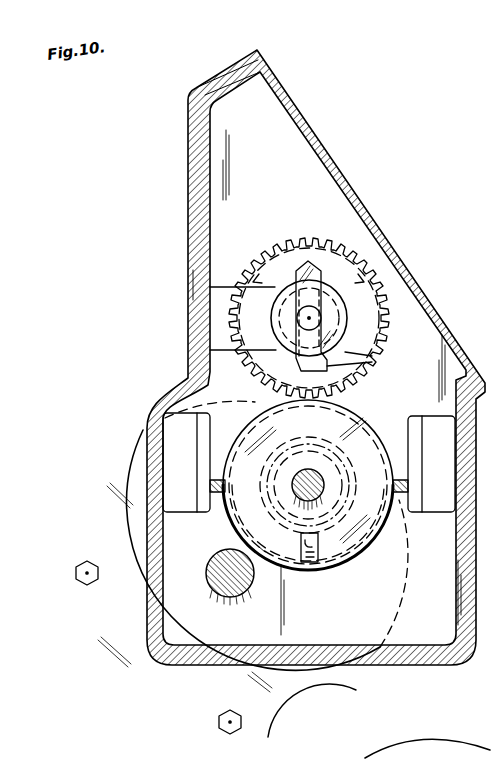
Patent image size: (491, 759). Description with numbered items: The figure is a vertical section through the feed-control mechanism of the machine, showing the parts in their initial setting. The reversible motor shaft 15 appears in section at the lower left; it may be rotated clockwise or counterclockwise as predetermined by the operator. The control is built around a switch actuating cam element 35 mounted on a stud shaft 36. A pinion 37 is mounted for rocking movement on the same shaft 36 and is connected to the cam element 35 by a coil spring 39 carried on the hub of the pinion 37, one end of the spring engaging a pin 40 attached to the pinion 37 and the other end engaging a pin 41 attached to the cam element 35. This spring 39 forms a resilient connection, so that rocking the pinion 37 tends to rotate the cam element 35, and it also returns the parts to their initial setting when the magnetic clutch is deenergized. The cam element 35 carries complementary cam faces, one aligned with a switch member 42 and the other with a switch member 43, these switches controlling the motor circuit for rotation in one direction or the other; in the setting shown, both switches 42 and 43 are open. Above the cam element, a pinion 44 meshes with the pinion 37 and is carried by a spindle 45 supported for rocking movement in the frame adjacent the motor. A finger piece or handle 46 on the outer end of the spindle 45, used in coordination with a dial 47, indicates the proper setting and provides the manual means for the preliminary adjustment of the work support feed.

The motor shaft 15 is at (220, 590).
The switch actuating cam element 35 is at (268, 432).
The stud shaft 36 is at (295, 478).
The pinion 37 is at (372, 432).
The coil spring 39 is at (301, 545).
The pin 40 is at (308, 562).
The pin 41 is at (322, 548).
The switch member 42 is at (400, 482).
The switch member 43 is at (215, 476).
The pinion 44 is at (262, 240).
The spindle 45 is at (322, 317).
The finger piece or handle 46 is at (366, 364).
The dial 47 is at (383, 300).